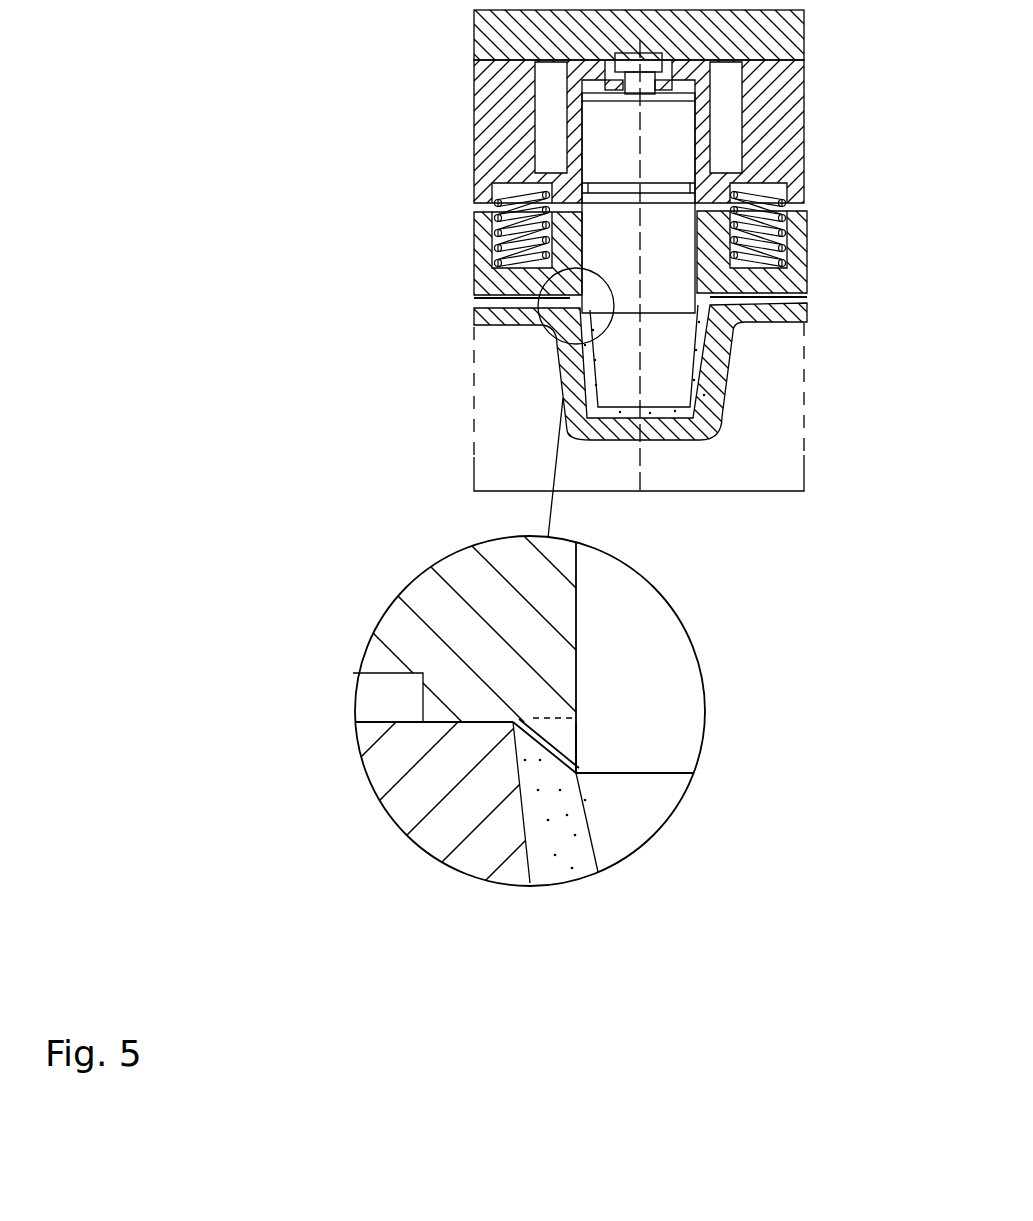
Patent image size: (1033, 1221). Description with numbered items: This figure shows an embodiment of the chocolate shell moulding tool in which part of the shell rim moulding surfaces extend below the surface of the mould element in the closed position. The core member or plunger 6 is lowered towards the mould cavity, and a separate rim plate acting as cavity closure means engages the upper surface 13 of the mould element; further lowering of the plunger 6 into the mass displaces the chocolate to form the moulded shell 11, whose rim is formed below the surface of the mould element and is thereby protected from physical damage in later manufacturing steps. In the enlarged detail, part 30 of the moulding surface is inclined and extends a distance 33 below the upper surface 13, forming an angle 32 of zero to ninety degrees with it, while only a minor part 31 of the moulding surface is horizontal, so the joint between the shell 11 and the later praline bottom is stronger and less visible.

The core member 6 is at (660, 350).
The shell 11 is at (695, 388).
The upper surface of the mould element 13 is at (474, 297).
The inclined part of the moulding surface 30 is at (540, 748).
The horizontal part of the moulding surface 31 is at (513, 722).
The angle 32 is at (540, 727).
The distance 33 is at (582, 743).